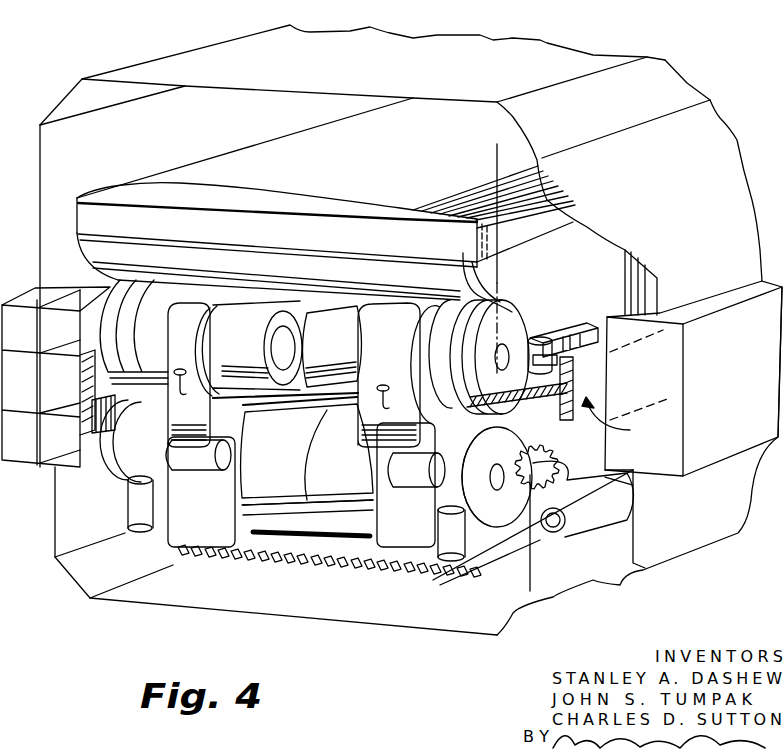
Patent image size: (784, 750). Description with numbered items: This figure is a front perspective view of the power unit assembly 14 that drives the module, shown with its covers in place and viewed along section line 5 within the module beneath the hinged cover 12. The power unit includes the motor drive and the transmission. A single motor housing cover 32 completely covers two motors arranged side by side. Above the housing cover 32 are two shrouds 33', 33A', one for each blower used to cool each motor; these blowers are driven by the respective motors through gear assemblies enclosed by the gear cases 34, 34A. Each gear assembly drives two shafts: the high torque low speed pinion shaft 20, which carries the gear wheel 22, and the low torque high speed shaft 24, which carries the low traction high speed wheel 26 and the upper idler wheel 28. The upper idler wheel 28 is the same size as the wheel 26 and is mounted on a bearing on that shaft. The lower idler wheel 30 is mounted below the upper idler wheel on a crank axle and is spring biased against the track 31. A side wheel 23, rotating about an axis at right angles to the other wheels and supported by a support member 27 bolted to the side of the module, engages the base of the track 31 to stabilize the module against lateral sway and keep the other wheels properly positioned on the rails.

The section line 5- 5 is at (497, 144).
The hinged cover 12 is at (226, 152).
The power unit assembly 14 is at (222, 580).
The high torque pinion shaft 20 is at (560, 492).
The gear wheel 22 is at (536, 470).
The side wheel 23 is at (585, 398).
The low torque high speed shaft 24 is at (505, 352).
The low traction high speed wheel 26 is at (470, 254).
The support member 27 is at (575, 330).
The upper idler wheel 28 is at (507, 316).
The lower idler wheel 30 is at (477, 566).
The track 31 is at (624, 419).
The motor housing cover 32 is at (306, 503).
The shroud 33' is at (332, 320).
The shroud 33A' is at (248, 321).
The gear case 34 is at (397, 321).
The gear case 34A is at (183, 313).